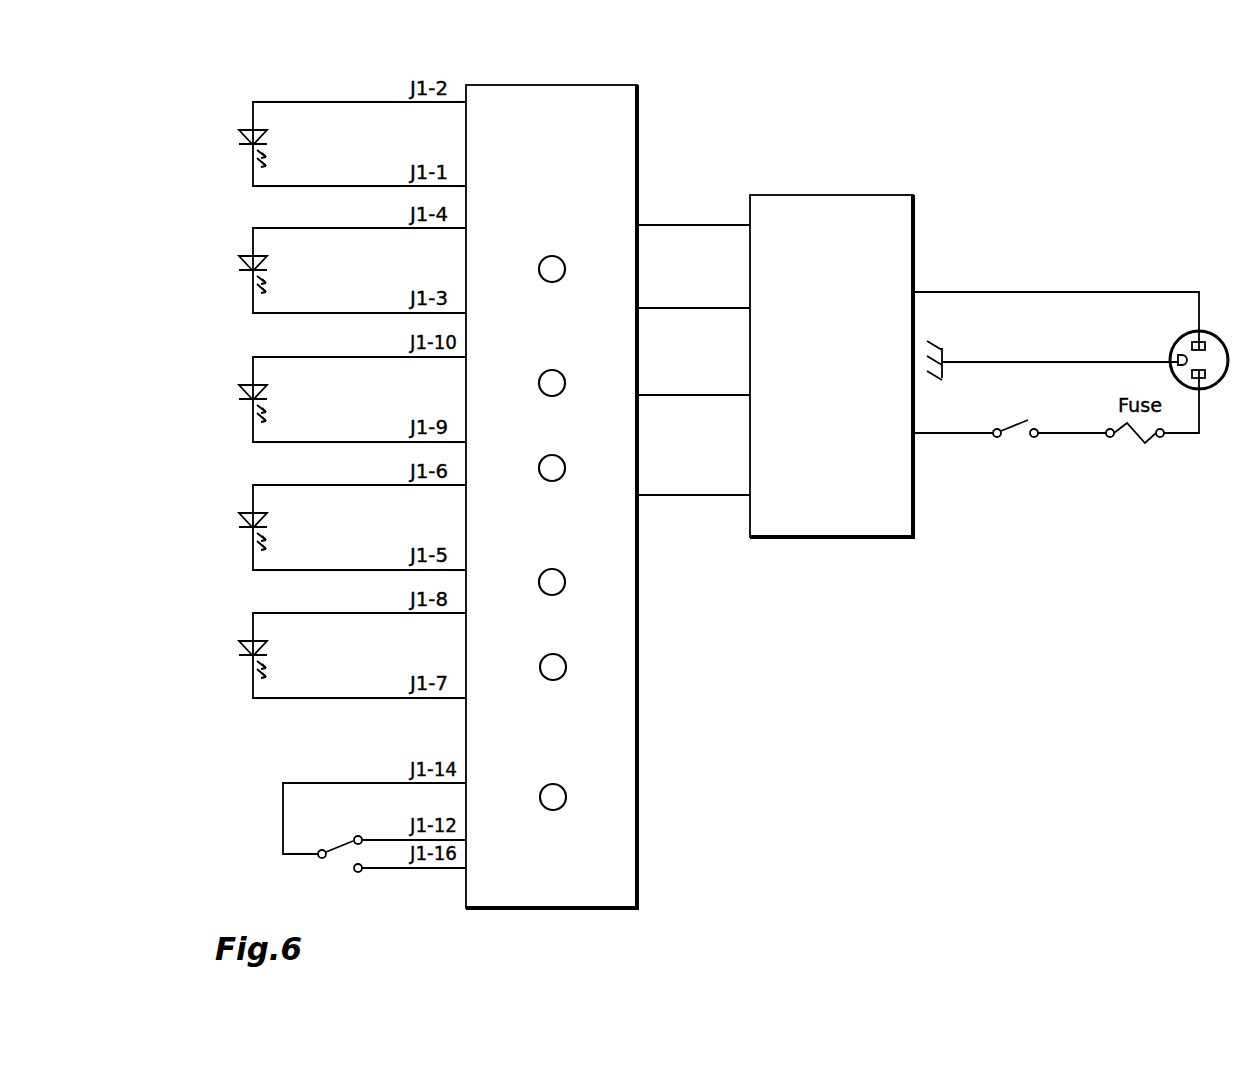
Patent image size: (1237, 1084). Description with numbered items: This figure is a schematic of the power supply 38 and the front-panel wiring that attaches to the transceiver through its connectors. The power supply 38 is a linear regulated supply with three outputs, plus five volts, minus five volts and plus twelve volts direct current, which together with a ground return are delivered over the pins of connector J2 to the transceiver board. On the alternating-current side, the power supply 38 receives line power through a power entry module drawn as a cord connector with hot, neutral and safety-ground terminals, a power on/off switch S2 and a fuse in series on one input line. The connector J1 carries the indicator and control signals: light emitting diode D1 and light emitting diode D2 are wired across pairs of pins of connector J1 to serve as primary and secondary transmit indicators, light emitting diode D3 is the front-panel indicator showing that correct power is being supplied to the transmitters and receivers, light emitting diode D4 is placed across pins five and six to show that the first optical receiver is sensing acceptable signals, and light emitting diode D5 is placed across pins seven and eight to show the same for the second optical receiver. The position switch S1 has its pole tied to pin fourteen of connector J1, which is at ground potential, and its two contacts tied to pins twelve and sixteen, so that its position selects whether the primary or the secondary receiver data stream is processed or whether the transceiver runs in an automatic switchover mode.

The power supply 38 is at (865, 203).
The connector J1 is at (552, 496).
The connector J2 is at (693, 314).
The LED D1 is at (352, 144).
The LED D2 is at (352, 270).
The LED D3 is at (352, 399).
The LED D4 is at (352, 527).
The LED D5 is at (352, 655).
The position switch S1 is at (374, 827).
The power on/off switch S2 is at (1015, 415).